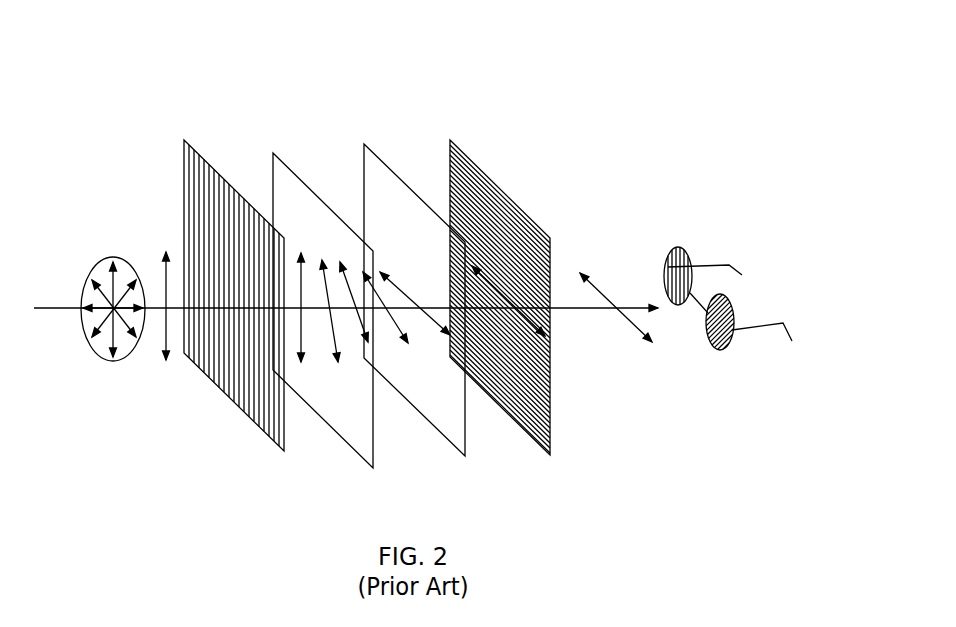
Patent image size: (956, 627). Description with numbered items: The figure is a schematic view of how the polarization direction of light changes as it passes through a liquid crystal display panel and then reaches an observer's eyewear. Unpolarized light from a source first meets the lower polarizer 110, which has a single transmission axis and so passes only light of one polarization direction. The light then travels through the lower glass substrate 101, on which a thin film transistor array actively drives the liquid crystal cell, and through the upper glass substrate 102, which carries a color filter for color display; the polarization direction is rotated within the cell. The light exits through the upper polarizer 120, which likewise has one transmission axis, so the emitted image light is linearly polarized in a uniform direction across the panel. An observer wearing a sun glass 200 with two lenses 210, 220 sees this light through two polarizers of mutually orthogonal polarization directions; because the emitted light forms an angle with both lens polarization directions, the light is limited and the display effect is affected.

The lower polarizer 110 is at (208, 205).
The lower glass substrate 101 is at (283, 197).
The upper glass substrate 102 is at (385, 197).
The upper polarizer 120 is at (473, 197).
The sun glass 200 is at (708, 247).
The lens 210 is at (665, 248).
The lens 220 is at (740, 307).